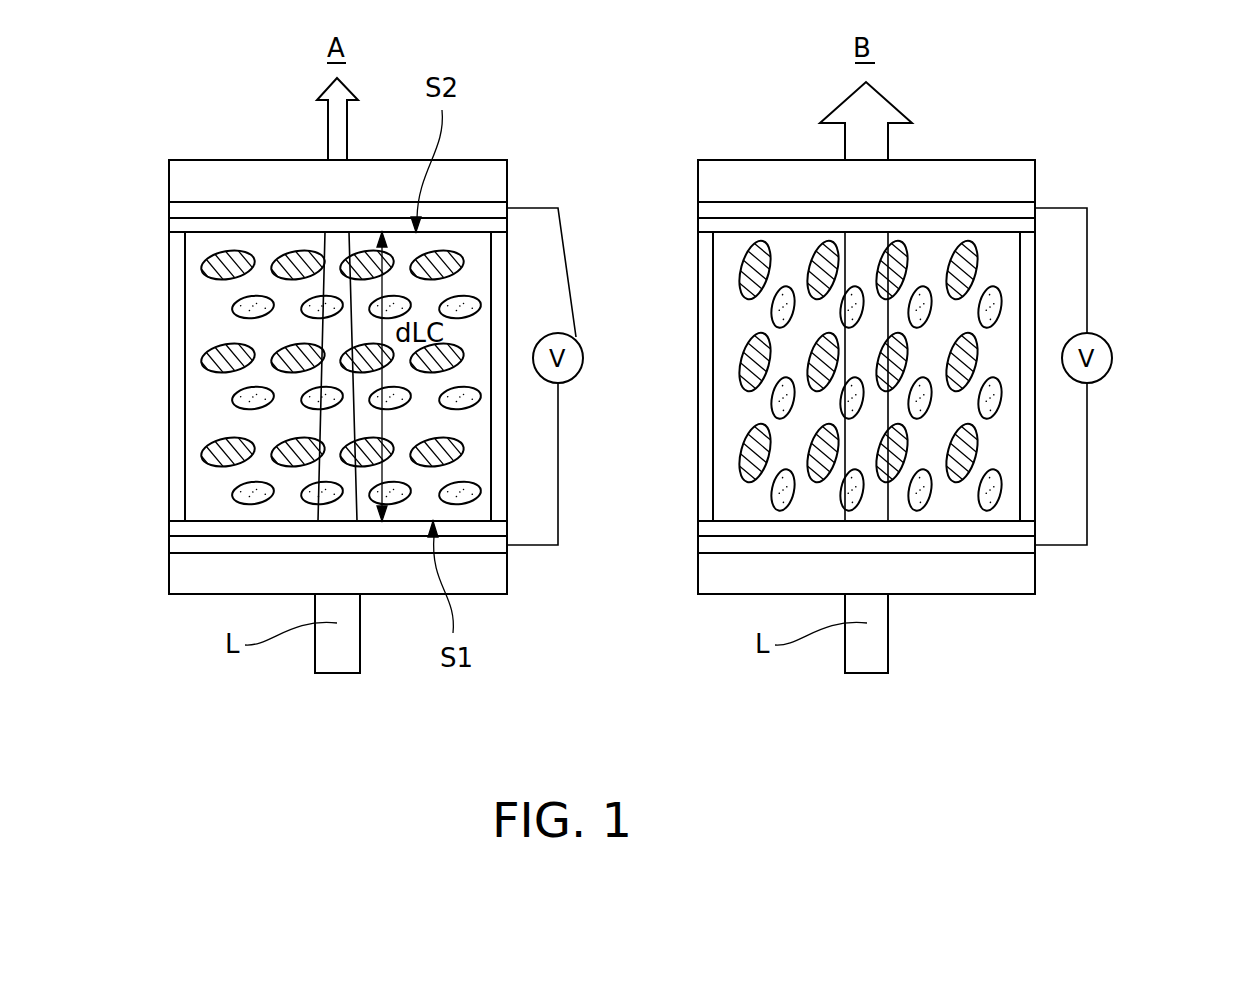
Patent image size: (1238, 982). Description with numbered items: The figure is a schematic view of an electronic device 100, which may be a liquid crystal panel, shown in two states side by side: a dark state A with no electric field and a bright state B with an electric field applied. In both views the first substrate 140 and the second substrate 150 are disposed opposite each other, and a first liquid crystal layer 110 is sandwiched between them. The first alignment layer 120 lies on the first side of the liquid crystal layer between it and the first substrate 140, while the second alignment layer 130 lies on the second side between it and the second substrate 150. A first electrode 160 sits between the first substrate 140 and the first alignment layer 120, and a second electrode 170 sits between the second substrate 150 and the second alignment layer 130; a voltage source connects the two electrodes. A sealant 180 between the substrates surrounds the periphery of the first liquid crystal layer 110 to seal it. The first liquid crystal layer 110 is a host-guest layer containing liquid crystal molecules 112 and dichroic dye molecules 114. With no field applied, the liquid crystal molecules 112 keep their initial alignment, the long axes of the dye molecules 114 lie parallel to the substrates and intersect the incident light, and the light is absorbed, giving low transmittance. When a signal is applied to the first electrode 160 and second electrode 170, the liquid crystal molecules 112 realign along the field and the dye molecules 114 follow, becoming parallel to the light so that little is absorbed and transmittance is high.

The electronic device 100 is at (603, 674).
The first liquid crystal layer 110 is at (655, 368).
The liquid crystal molecules 112 is at (220, 358).
The dye molecules 114 is at (238, 303).
The first alignment layer 120 is at (180, 528).
The second alignment layer 130 is at (180, 224).
The first substrate 140 is at (178, 573).
The second substrate 150 is at (185, 177).
The first electrode 160 is at (180, 543).
The second electrode 170 is at (180, 209).
The sealant 180 is at (176, 445).